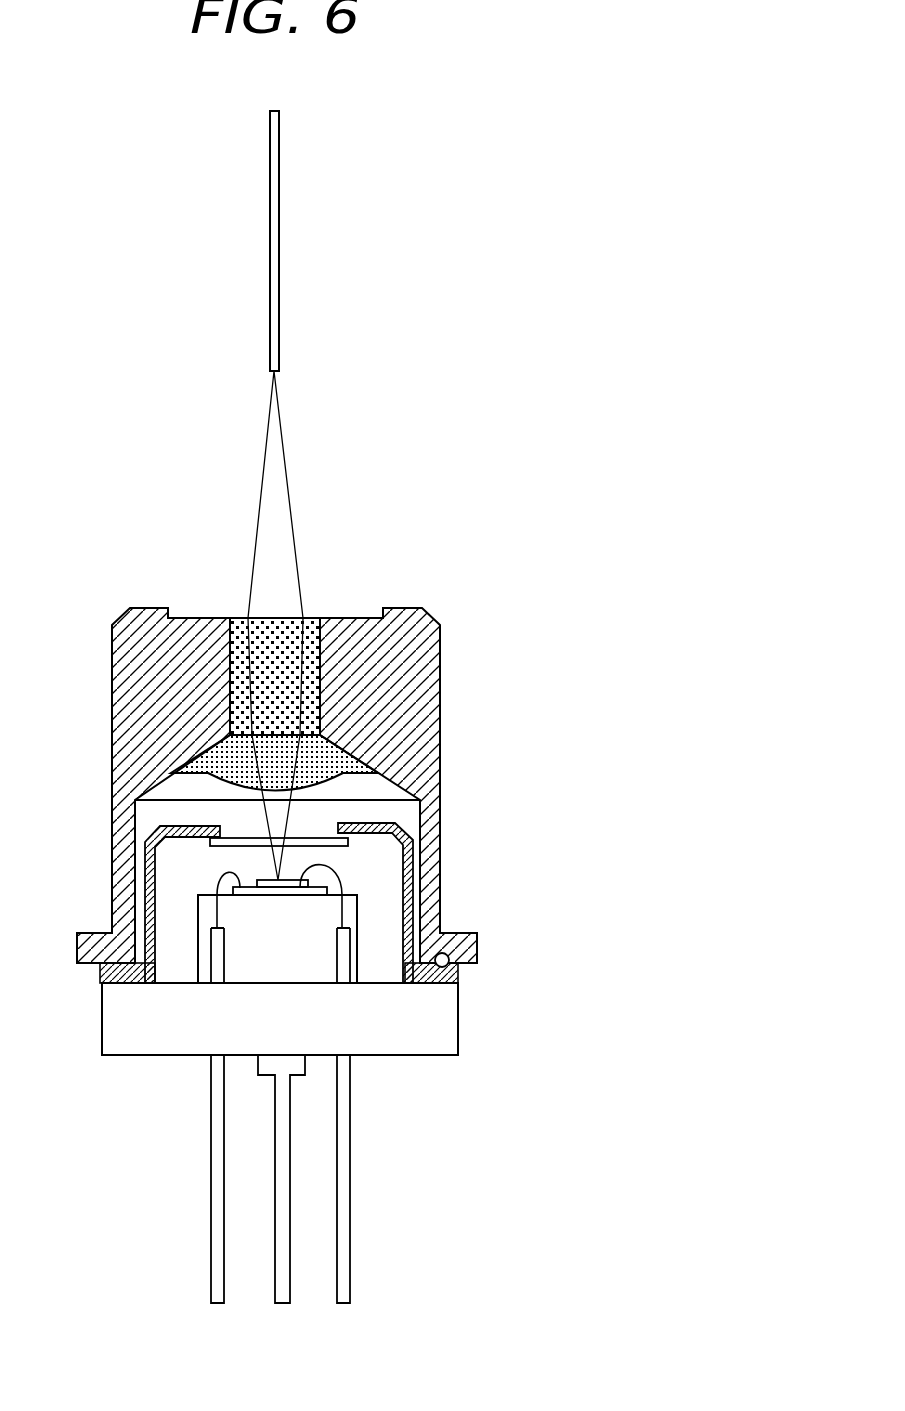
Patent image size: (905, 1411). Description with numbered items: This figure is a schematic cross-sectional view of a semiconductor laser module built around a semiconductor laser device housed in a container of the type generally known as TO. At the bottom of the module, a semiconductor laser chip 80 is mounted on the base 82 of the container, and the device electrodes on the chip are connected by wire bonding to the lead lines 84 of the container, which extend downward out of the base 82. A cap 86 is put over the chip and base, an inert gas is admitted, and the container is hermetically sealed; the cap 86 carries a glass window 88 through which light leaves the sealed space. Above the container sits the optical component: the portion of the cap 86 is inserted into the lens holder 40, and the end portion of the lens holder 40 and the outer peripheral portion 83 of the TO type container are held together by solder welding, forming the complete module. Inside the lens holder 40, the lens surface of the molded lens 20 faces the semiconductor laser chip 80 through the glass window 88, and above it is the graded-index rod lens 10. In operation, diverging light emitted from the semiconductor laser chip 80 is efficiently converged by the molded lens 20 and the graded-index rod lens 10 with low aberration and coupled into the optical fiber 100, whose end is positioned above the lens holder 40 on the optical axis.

The optical fiber 100 is at (277, 293).
The graded-index rod lens 10 is at (283, 628).
The lens holder 40 is at (400, 670).
The molded lens 20 is at (335, 765).
The cap 86 is at (385, 823).
The glass window 88 is at (250, 838).
The semiconductor laser chip 80 is at (300, 885).
The outer peripheral portion 83 is at (450, 963).
The base 82 is at (435, 1028).
The lead lines 84 is at (345, 1257).